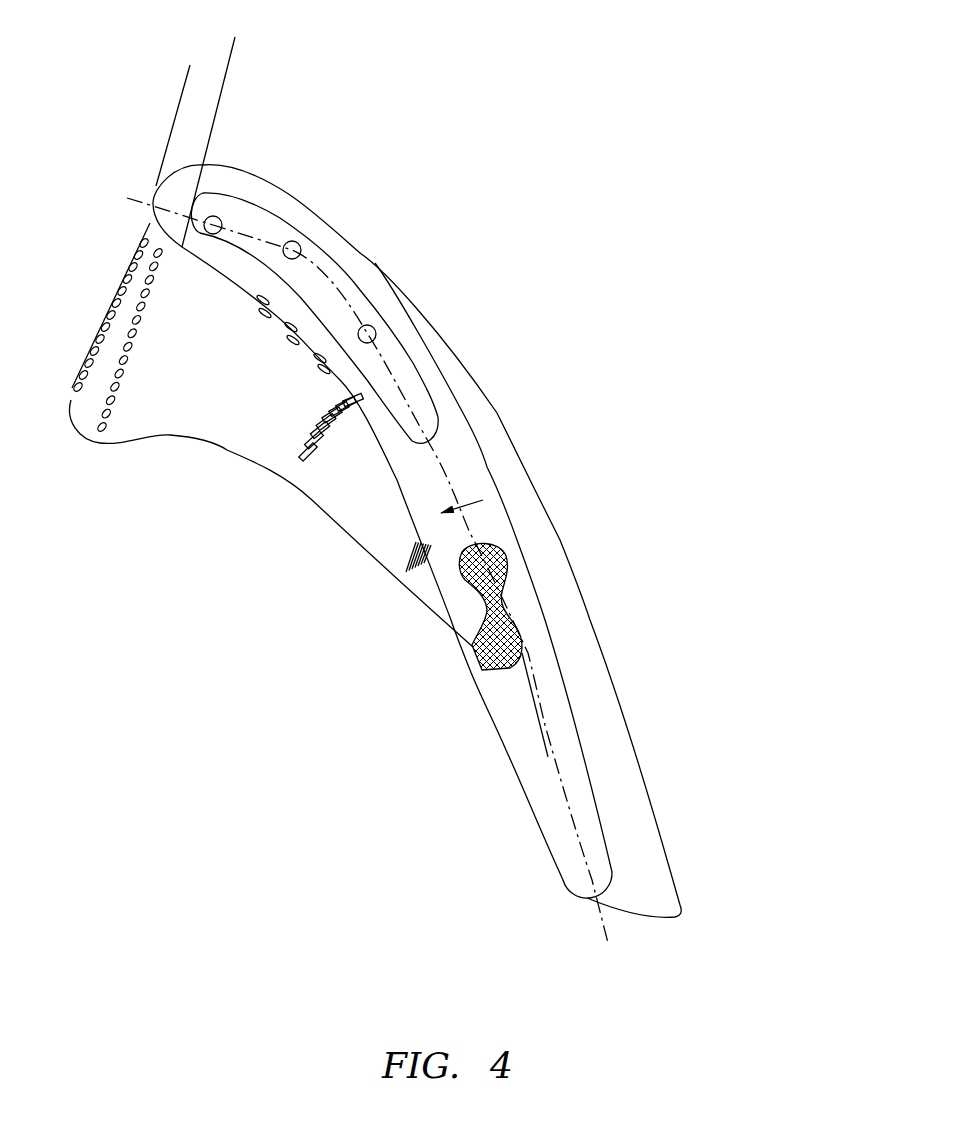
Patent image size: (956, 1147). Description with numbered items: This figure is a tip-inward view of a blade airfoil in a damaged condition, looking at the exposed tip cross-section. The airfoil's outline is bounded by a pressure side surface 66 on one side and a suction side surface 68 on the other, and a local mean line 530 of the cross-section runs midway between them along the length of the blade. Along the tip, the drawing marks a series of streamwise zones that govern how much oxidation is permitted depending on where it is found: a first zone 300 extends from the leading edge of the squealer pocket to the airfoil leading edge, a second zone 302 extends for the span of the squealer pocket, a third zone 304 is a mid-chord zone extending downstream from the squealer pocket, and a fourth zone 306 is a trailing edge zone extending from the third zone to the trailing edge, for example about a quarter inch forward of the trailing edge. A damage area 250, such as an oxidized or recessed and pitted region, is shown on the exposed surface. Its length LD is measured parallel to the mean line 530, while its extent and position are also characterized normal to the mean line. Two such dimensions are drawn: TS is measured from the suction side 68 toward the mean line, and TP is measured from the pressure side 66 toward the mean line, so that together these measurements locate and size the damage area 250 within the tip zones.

The first zone 300 is at (280, 100).
The second zone 302 is at (608, 345).
The third zone 304 is at (388, 458).
The fourth zone 306 is at (540, 915).
The local mean line 530 is at (443, 474).
The damage area 250 is at (550, 623).
The pressure side surface 66 is at (508, 750).
The suction side surface 68 is at (593, 795).
The dimension measured from the pressure side TP is at (418, 528).
The length of damage area LD is at (473, 550).
The dimension measured from the suction side TS is at (617, 702).